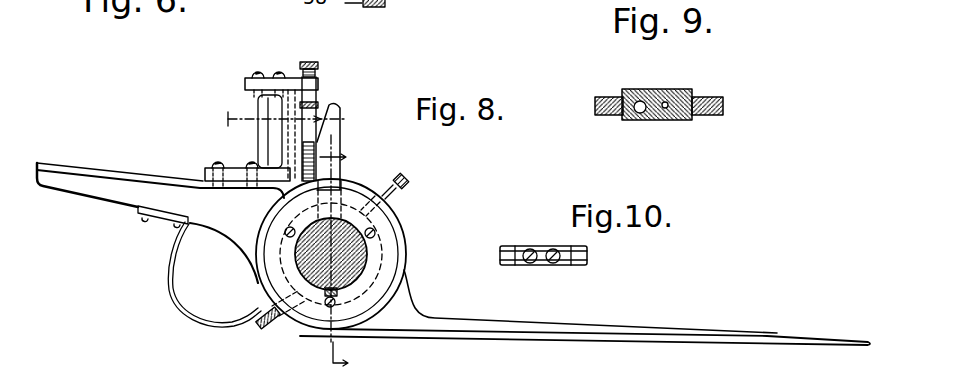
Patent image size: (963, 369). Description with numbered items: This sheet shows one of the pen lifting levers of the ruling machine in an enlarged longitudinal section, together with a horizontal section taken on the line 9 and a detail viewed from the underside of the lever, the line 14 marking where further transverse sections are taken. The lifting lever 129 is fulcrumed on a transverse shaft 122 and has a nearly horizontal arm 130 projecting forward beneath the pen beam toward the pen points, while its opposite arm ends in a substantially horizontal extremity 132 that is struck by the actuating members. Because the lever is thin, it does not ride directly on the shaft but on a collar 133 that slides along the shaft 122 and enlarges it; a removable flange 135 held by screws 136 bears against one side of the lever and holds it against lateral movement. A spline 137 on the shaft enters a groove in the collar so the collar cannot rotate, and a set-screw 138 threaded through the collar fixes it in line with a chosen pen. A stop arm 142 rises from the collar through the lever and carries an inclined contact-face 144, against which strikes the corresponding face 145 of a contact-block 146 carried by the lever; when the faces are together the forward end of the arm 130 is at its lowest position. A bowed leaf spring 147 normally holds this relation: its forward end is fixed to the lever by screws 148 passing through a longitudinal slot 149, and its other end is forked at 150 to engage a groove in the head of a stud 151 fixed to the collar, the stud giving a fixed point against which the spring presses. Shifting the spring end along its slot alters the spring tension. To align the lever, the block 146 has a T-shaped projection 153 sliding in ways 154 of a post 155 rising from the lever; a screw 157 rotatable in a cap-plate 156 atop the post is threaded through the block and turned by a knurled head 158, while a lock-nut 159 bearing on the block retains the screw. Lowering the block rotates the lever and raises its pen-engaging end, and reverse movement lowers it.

In FIG. 8, the section line 9- 9 is at (282, 125).
In FIG. 8, the section line 14- 14 is at (346, 250).
In FIG. 8, the shaft 122 is at (361, 261).
In FIG. 8, the lifting lever 129 is at (406, 238).
In FIG. 8, the horizontal arm 130 is at (788, 332).
In FIG. 8, the horizontal extremity 132 is at (116, 171).
In FIG. 8, the collar 133 is at (365, 272).
In FIG. 8, the removable flange 135 is at (260, 265).
In FIG. 8, the screws 136 is at (373, 230).
In FIG. 8, the spline 137 is at (338, 297).
In FIG. 8, the set-screw 138 is at (404, 185).
In FIG. 8, the stop arm 142 is at (341, 147).
In FIG. 8, the inclined contact-face 144 is at (329, 139).
In FIG. 8, the contact face 145 is at (309, 121).
In FIG. 9, the contact face 145 is at (725, 108).
In FIG. 8, the contact-block 146 is at (341, 112).
In FIG. 8, the bowed leaf spring 147 is at (181, 313).
In FIG. 10, the bowed leaf spring 147 is at (540, 246).
In FIG. 8, the screws 148 is at (176, 227).
In FIG. 10, the screws 148 is at (553, 266).
In FIG. 10, the longitudinal slot 149 is at (523, 264).
In FIG. 8, the forked end 150 is at (276, 326).
In FIG. 8, the stud 151 is at (264, 320).
In FIG. 9, the T-shaped projection 153 is at (638, 99).
In FIG. 9, the ways 154 is at (621, 121).
In FIG. 8, the post 155 is at (267, 139).
In FIG. 9, the post 155 is at (595, 108).
In FIG. 8, the cap-plate 156 is at (292, 78).
In FIG. 8, the screw 157 is at (318, 170).
In FIG. 9, the screw 157 is at (688, 121).
In FIG. 8, the knurled head 158 is at (318, 63).
In FIG. 8, the lock-nut 159 is at (318, 104).